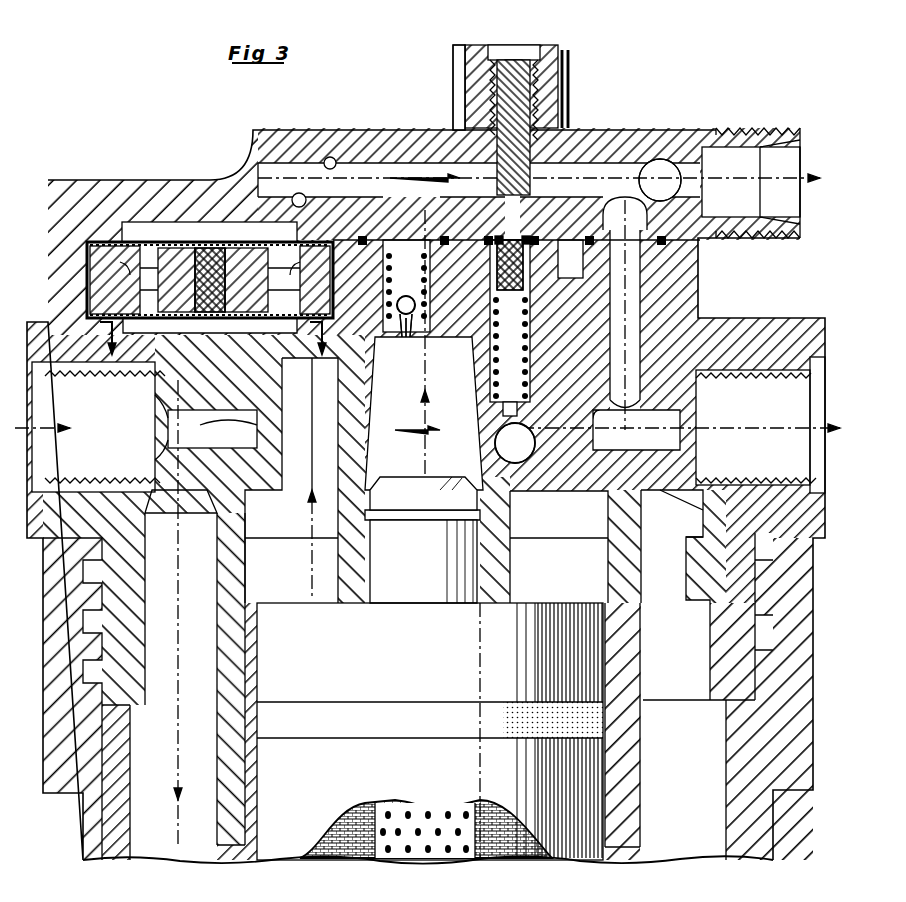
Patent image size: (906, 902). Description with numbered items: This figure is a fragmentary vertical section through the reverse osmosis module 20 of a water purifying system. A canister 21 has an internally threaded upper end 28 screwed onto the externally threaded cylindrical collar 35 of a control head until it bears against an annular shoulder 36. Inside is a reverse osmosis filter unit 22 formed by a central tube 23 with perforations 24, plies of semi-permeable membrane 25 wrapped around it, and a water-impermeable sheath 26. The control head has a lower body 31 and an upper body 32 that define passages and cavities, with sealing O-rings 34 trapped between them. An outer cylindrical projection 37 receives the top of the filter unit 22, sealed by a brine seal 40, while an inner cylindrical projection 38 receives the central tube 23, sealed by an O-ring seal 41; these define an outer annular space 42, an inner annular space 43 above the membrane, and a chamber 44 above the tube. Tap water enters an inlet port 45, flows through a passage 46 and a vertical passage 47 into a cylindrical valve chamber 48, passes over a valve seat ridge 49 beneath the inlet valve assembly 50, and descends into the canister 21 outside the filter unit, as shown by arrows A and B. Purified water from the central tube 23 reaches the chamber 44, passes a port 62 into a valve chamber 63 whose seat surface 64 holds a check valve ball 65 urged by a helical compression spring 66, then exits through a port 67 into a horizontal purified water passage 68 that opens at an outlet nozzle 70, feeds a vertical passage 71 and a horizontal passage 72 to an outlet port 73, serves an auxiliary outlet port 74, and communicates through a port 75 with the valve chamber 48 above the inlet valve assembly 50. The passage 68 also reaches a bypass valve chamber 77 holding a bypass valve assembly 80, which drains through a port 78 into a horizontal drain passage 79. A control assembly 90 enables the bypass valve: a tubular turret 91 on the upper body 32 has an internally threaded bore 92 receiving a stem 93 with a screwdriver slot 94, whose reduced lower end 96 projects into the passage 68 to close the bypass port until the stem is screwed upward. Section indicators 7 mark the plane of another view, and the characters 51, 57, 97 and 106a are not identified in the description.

The reverse osmosis module 20 is at (426, 483).
The canister 21 is at (88, 838).
The reverse osmosis filter unit 22 is at (279, 844).
The central tube 23 is at (478, 558).
The perforations 24 is at (435, 858).
The semi-permeable membrane 25 is at (516, 846).
The water-impermeable cylindrical sheath 26 is at (575, 865).
The internally threaded upper end 28 is at (800, 700).
The lower body 31 is at (709, 318).
The upper body 32 is at (710, 262).
The sealing O-rings 34 is at (362, 236).
The externally threaded cylindrical collar 35 is at (757, 620).
The annular shoulder 36 is at (820, 540).
The outer cylindrical projection 37 is at (225, 800).
The inner cylindrical projection 38 is at (505, 588).
The brine seal 40 is at (322, 702).
The O-ring seal 41 is at (395, 520).
The outer annular space 42 is at (135, 772).
The inner annular space 43 is at (587, 504).
The chamber 44 is at (368, 441).
The inlet port 45 is at (60, 455).
The passage 46 is at (165, 452).
The vertical passage 47 is at (228, 405).
The cylindrical valve chamber 48 is at (138, 222).
The annular upstanding valve seat ridge 49 is at (155, 380).
The inlet valve assembly 50 is at (188, 222).
The element 51 is at (125, 890).
The element 57 is at (193, 890).
The port 62 is at (403, 314).
The valve chamber 63 is at (389, 250).
The seat surface 64 is at (415, 310).
The check valve ball 65 is at (408, 318).
The helical compression spring 66 is at (425, 240).
The port 67 is at (405, 240).
The purified water passage 68 is at (328, 163).
The outlet nozzle 70 is at (790, 162).
The vertical passage 71 is at (650, 295).
The horizontal passage 72 is at (672, 408).
The outlet port 73 is at (800, 402).
The auxiliary outlet port 74 is at (660, 160).
The port 75 is at (299, 200).
The bypass valve chamber 77 is at (495, 398).
The port 78 is at (503, 412).
The drain passage 79 is at (496, 452).
The bypass valve assembly 80 is at (528, 300).
The control assembly 90 is at (560, 143).
The upstanding tubular turret 91 is at (465, 95).
The internally threaded bore 92 is at (530, 52).
The stem 93 is at (497, 100).
The screwdriver slot 94 is at (515, 55).
The reduced lower end 96 is at (565, 130).
The element 97 is at (803, 901).
The bracket 106a is at (453, 75).
The section line 7 is at (210, 338).
The arrow A is at (40, 415).
The arrow B is at (175, 782).